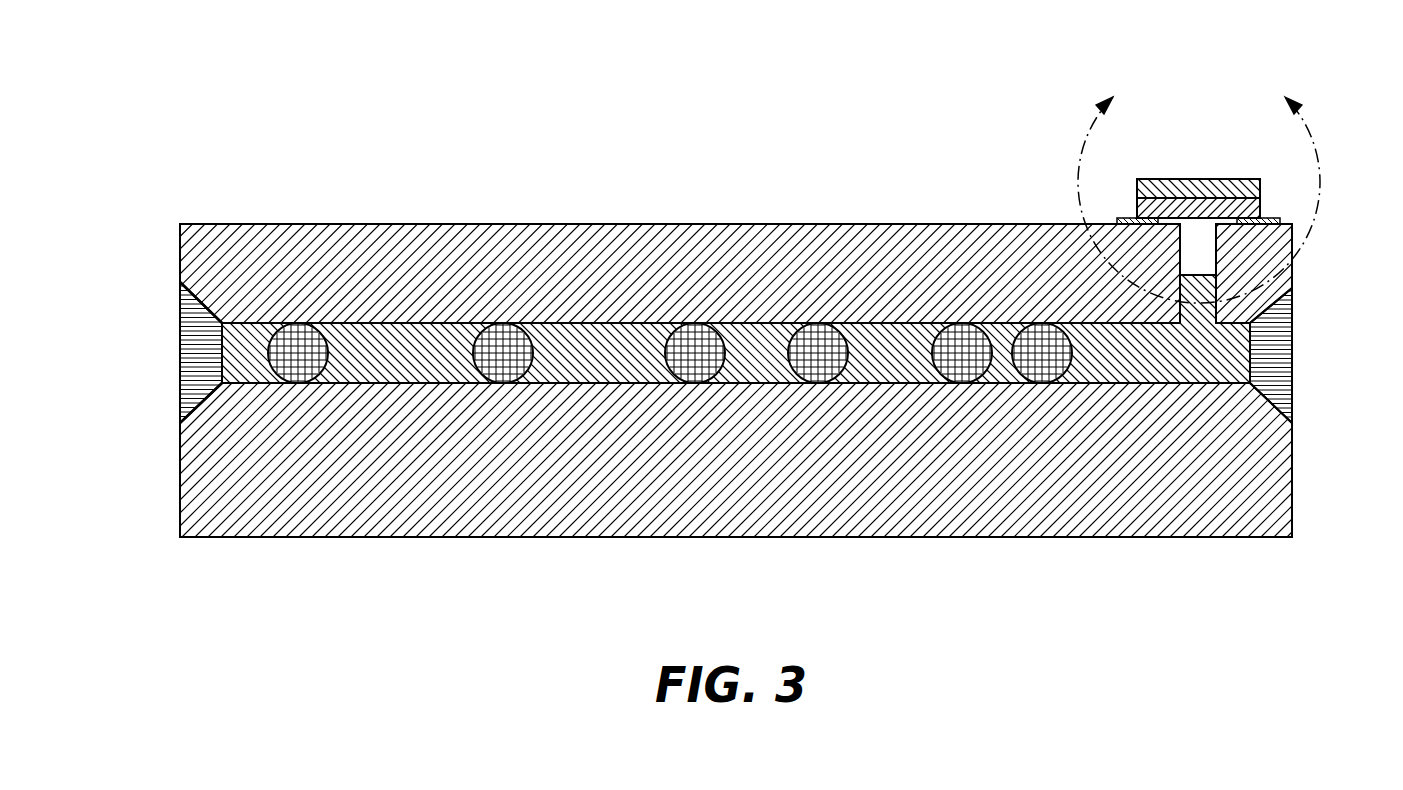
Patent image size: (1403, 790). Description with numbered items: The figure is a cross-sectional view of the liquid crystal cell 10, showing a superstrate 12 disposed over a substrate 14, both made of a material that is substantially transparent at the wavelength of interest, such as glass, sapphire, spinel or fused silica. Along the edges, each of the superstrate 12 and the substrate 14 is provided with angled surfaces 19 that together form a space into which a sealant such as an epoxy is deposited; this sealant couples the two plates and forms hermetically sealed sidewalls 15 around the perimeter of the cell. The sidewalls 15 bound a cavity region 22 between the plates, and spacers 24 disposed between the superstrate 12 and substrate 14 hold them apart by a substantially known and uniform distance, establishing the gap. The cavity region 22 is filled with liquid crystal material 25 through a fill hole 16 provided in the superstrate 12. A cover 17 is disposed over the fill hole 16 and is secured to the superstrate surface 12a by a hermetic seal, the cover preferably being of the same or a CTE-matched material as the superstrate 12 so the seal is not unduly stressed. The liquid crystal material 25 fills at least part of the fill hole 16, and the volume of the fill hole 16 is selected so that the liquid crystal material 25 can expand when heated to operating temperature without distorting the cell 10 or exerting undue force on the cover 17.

The liquid crystal cell 10 is at (518, 108).
The superstrate 12 is at (180, 244).
The superstrate surface 12a is at (218, 224).
The substrate 14 is at (180, 481).
The sidewalls 15 is at (180, 354).
The fill hole 16 is at (1200, 250).
The cover 17 is at (1261, 196).
The angled surfaces 19 is at (203, 306).
The cavity region 22 is at (1218, 362).
The spacers 24 is at (303, 343).
The liquid crystal material 25 is at (1128, 367).